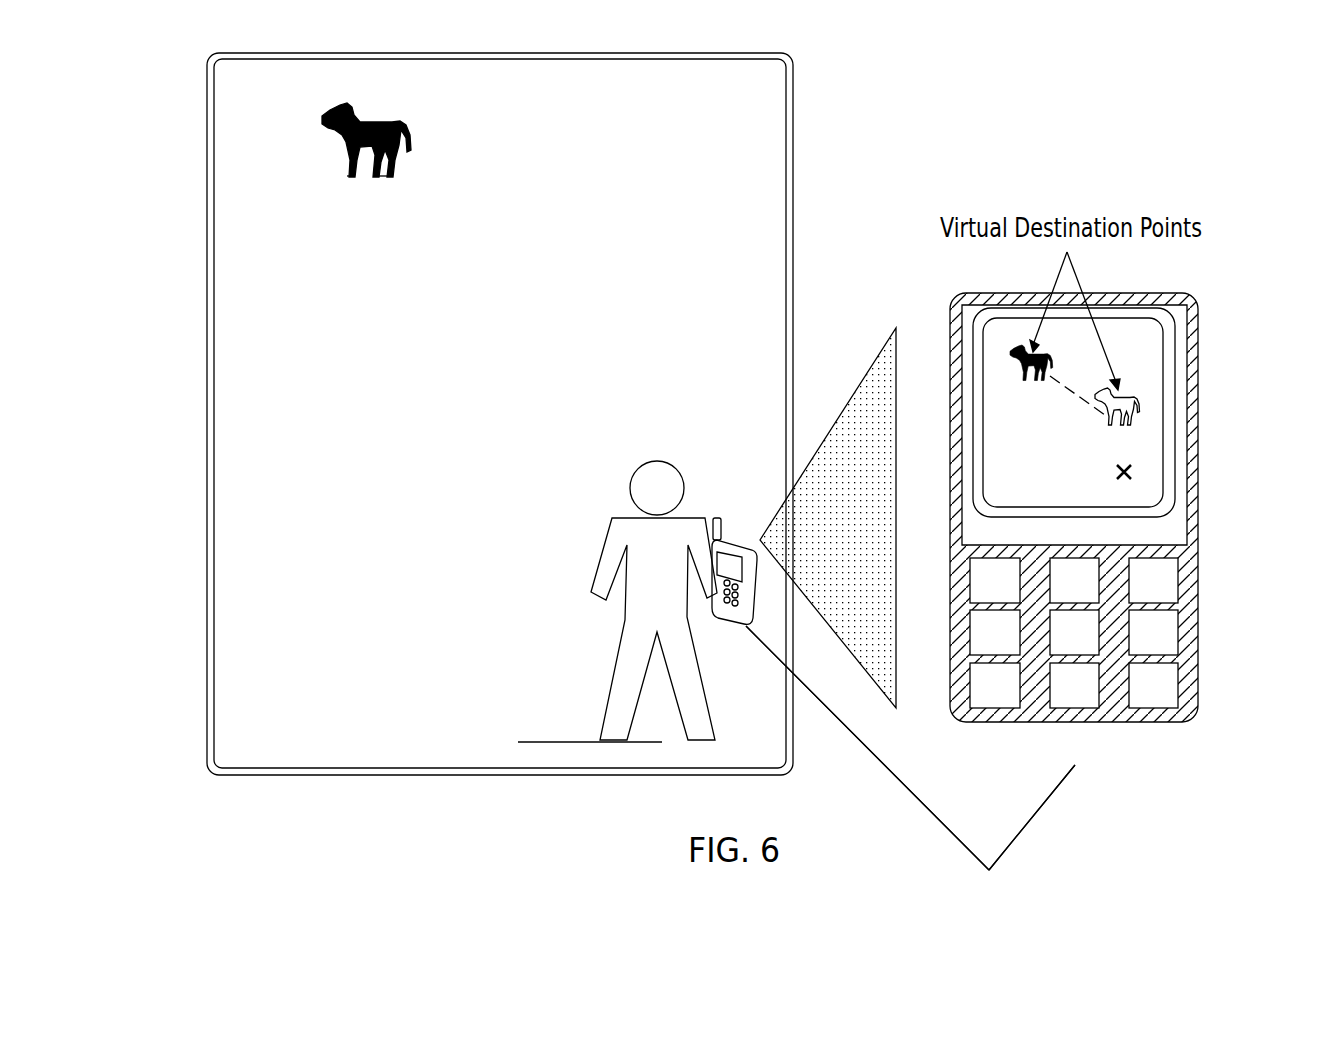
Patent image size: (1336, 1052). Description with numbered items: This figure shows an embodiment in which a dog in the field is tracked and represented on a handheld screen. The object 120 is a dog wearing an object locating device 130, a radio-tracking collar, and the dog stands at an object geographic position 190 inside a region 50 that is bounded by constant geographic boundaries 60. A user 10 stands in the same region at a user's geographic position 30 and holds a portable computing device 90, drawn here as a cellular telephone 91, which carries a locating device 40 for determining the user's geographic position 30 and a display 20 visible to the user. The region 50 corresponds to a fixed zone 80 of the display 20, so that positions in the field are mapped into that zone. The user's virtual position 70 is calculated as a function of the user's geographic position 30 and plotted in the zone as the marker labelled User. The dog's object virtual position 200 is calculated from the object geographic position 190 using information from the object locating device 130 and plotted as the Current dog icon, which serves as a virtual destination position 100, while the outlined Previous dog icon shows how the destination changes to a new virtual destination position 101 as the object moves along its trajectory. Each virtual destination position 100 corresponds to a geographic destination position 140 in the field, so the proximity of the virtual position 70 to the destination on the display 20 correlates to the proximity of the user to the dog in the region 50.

The user 10 is at (670, 613).
The display 20 is at (1175, 318).
The user's geographic position 30 is at (573, 742).
The locating device 40 is at (910, 767).
The region 50 is at (673, 127).
The constant geographic boundaries 60 is at (790, 210).
The virtual position 70 is at (1135, 472).
The fixed zone 80 is at (1143, 367).
The portable computing device 90 is at (989, 870).
The cellular telephone 91 is at (989, 870).
The virtual destination position 100 is at (1143, 418).
The new virtual destination position 101 is at (1028, 407).
The object 120 is at (405, 125).
The object locating device 130 is at (322, 107).
The geographic destination position 140 is at (347, 181).
The object geographic position 190 is at (372, 183).
The object virtual position 200 is at (1016, 342).